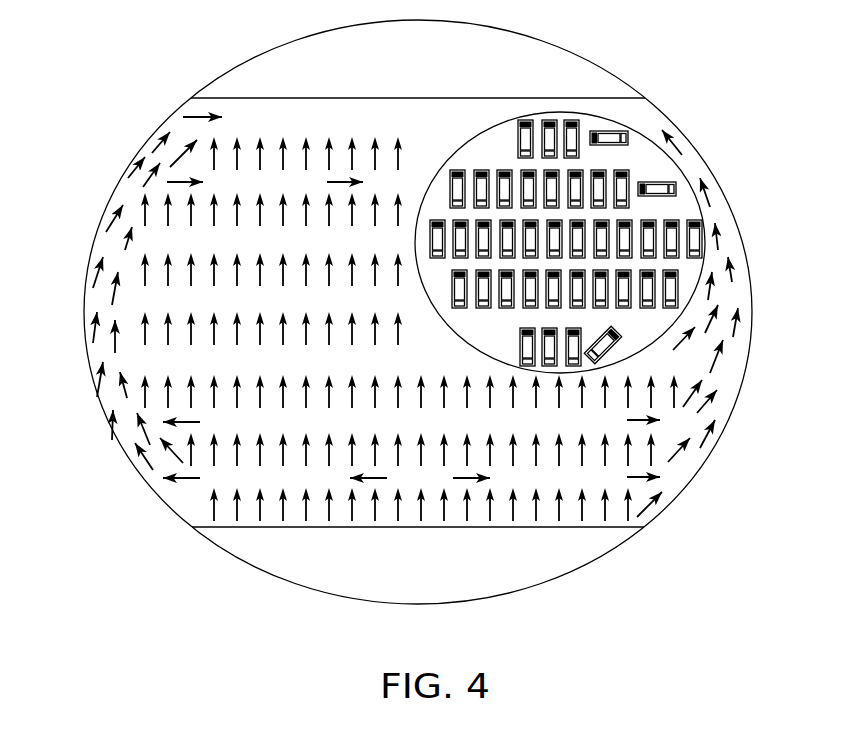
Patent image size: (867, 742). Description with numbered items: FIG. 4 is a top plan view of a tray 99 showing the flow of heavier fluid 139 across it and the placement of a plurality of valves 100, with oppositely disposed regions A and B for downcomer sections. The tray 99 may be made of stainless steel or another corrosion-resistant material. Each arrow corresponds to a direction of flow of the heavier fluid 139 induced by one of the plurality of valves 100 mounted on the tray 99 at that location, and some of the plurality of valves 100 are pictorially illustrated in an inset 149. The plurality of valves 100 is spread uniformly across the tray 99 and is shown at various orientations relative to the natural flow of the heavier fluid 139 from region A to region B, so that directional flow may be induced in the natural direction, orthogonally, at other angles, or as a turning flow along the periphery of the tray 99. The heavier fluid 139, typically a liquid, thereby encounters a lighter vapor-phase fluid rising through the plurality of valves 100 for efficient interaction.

The tray 99 is at (693, 150).
The plurality of valves 100 is at (526, 120).
The heavier fluid 139 is at (112, 222).
The inset 149 is at (697, 298).